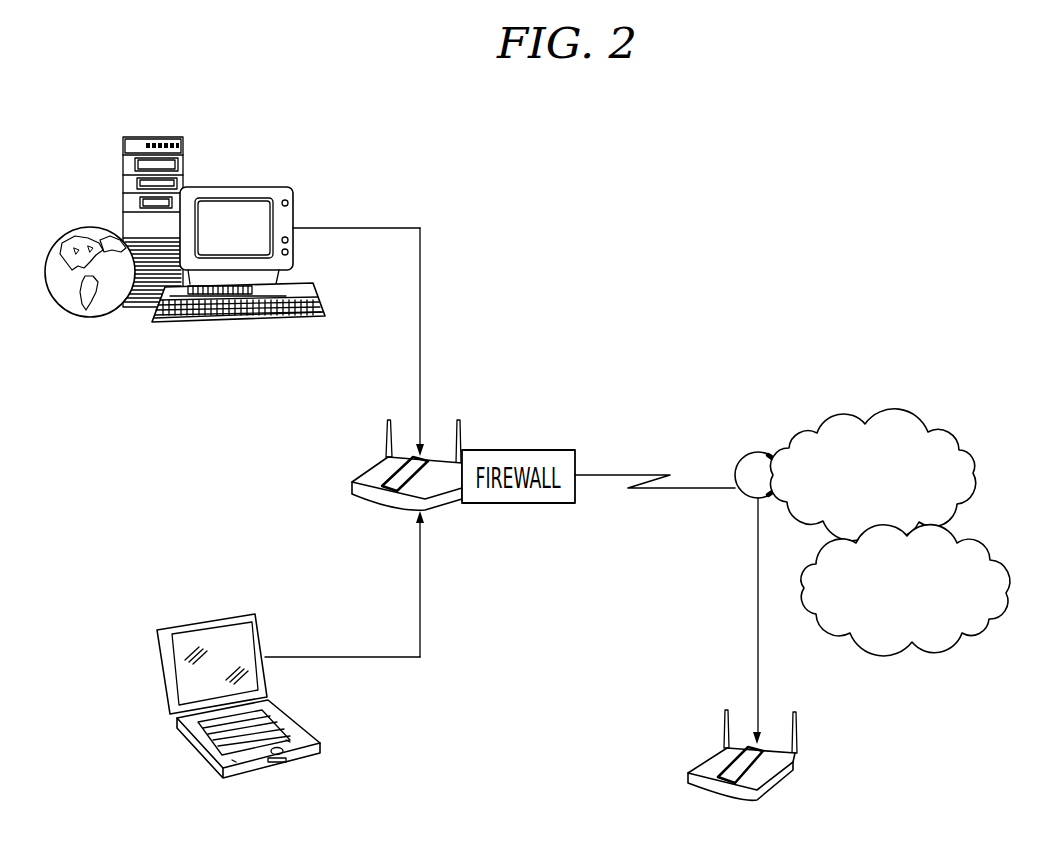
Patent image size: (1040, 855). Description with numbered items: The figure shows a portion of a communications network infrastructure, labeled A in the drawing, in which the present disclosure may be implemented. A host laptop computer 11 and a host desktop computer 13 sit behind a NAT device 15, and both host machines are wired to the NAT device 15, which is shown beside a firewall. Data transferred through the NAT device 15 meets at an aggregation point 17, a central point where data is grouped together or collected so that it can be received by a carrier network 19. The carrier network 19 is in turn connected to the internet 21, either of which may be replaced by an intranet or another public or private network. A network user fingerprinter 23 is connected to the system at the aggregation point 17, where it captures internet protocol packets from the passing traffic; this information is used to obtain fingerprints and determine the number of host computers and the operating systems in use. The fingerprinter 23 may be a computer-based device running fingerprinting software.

The host laptop computer 11 is at (208, 618).
The host desktop computer 13 is at (240, 187).
The NAT device 15 is at (352, 482).
The aggregation point 17 is at (760, 452).
The carrier network 19 is at (870, 418).
The internet 21 is at (893, 648).
The network user fingerprinter 23 is at (790, 776).
The communication system A is at (778, 220).